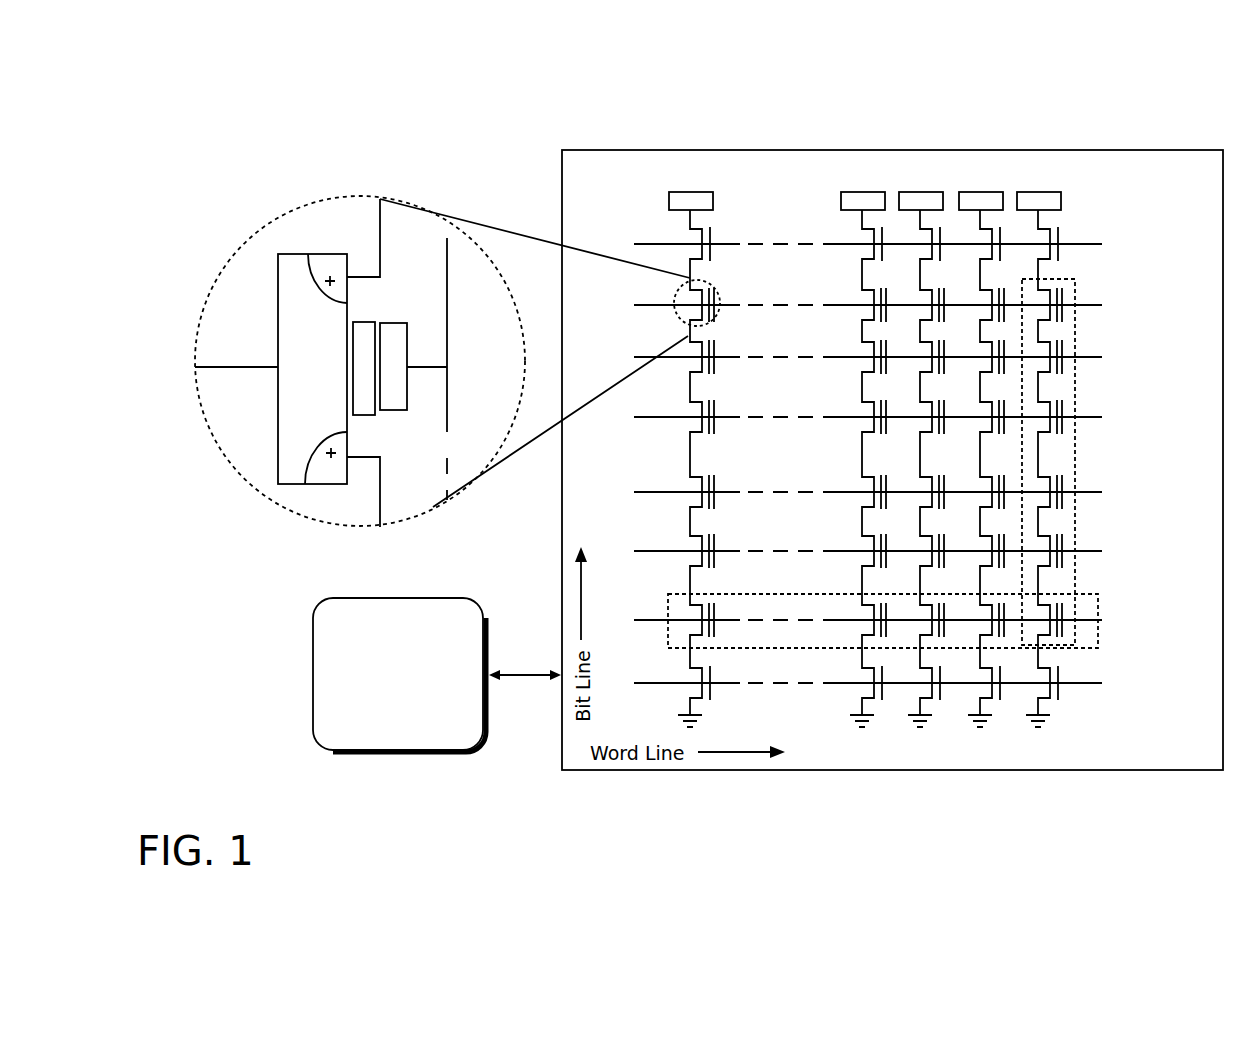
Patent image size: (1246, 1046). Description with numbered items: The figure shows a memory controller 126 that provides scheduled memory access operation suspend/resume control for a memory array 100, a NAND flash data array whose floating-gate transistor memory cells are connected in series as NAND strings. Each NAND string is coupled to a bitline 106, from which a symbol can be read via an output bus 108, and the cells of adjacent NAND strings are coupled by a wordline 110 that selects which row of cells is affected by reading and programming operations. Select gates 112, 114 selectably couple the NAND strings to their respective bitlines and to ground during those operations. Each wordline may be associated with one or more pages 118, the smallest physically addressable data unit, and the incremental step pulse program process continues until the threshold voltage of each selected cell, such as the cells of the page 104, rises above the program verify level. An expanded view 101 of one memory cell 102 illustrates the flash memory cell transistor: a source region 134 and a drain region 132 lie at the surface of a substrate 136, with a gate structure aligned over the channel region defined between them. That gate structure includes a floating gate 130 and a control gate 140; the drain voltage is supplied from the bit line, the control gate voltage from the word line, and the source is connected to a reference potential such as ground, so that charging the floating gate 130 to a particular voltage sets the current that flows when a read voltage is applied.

The memory array 100 is at (342, 103).
The expanded view 101 is at (224, 500).
The memory cell 102 is at (720, 296).
The page 104 is at (1075, 332).
The bitline 106 is at (1038, 220).
The bus 108 is at (1061, 198).
The wordline 110 is at (1090, 303).
The select gate 112 is at (1062, 251).
The select gate 114 is at (1050, 708).
The page 118 is at (708, 594).
The memory controller 126 is at (384, 710).
The floating gate 130 is at (363, 322).
The drain region 132 is at (339, 268).
The source region 134 is at (338, 466).
The substrate 136 is at (333, 384).
The control gate 140 is at (390, 410).